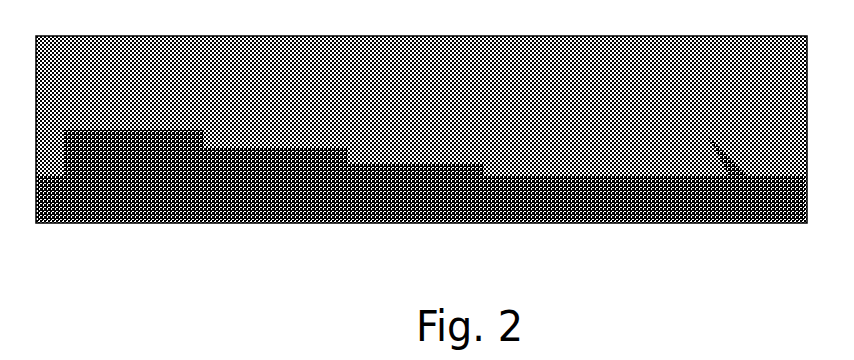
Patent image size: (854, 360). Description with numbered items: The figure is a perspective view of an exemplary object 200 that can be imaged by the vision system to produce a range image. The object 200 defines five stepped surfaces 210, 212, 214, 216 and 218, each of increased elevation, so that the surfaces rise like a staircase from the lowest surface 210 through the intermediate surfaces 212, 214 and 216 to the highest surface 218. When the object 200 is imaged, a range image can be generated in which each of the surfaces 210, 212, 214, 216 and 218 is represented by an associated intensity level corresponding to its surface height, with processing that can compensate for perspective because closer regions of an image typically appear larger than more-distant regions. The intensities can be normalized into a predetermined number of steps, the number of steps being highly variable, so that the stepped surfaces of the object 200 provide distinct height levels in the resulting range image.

The object 200 is at (720, 178).
The first stepped surface 210 is at (667, 135).
The second stepped surface 212 is at (533, 133).
The third stepped surface 214 is at (404, 128).
The fourth stepped surface 216 is at (283, 105).
The fifth stepped surface 218 is at (138, 100).